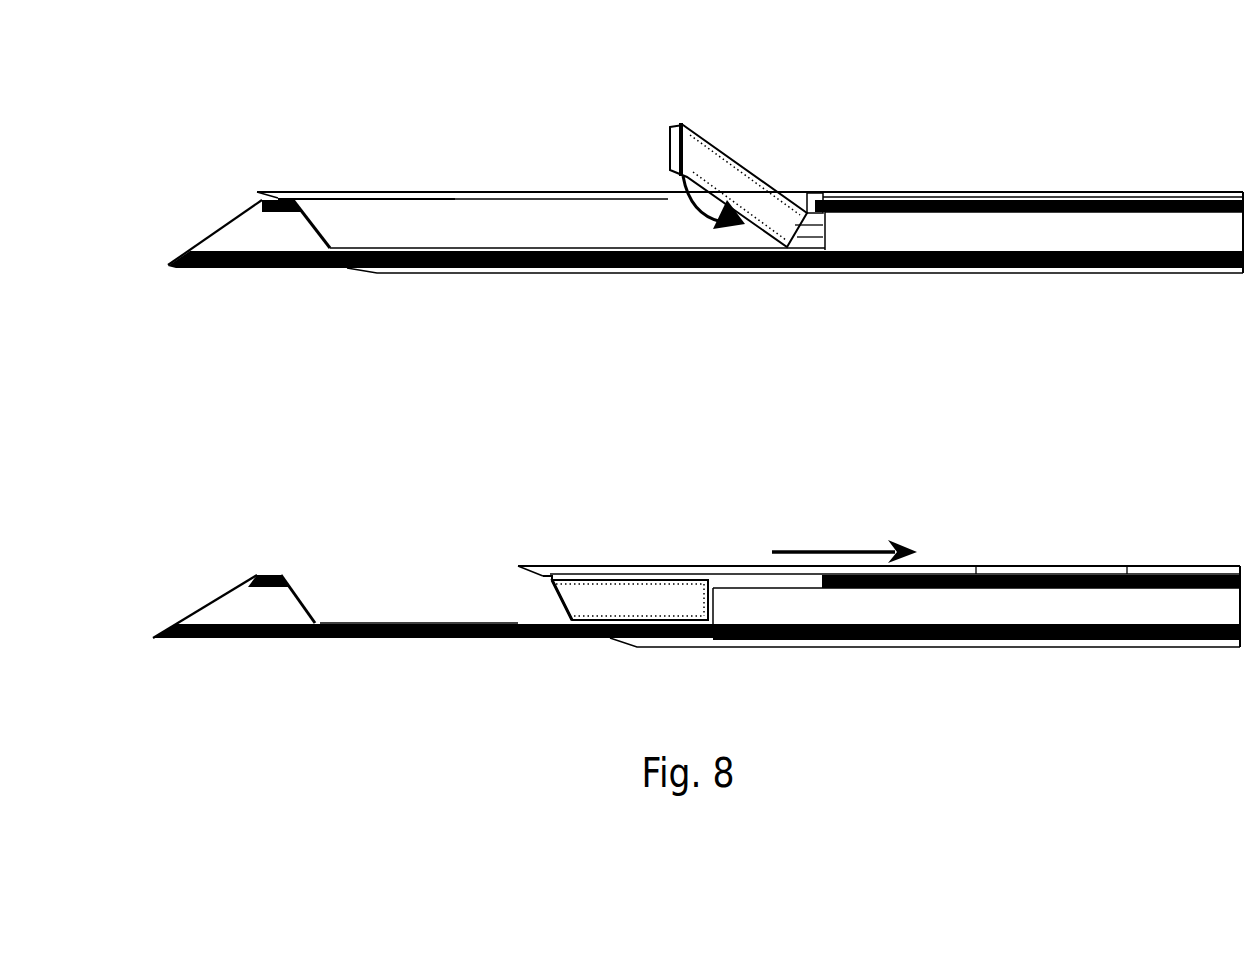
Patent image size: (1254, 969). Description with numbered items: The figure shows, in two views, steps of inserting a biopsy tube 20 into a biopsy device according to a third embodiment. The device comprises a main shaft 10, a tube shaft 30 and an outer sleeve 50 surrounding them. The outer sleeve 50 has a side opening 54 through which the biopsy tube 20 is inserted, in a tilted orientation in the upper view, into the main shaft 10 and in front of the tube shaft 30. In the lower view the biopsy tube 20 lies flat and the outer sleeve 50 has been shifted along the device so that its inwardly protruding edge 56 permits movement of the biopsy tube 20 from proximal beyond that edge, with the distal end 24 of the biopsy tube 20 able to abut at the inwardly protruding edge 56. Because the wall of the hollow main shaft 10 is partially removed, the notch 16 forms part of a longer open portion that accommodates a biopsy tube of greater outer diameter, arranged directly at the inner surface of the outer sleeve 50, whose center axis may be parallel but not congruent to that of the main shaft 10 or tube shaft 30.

The main shaft 10 is at (272, 263).
The notch 16 is at (398, 590).
The biopsy tube 20 is at (718, 172).
The distal end 24 is at (560, 607).
The tube shaft 30 is at (934, 228).
The outer sleeve 50 is at (488, 188).
The side opening 54 is at (806, 190).
The inwardly protruding edge 56 is at (541, 578).